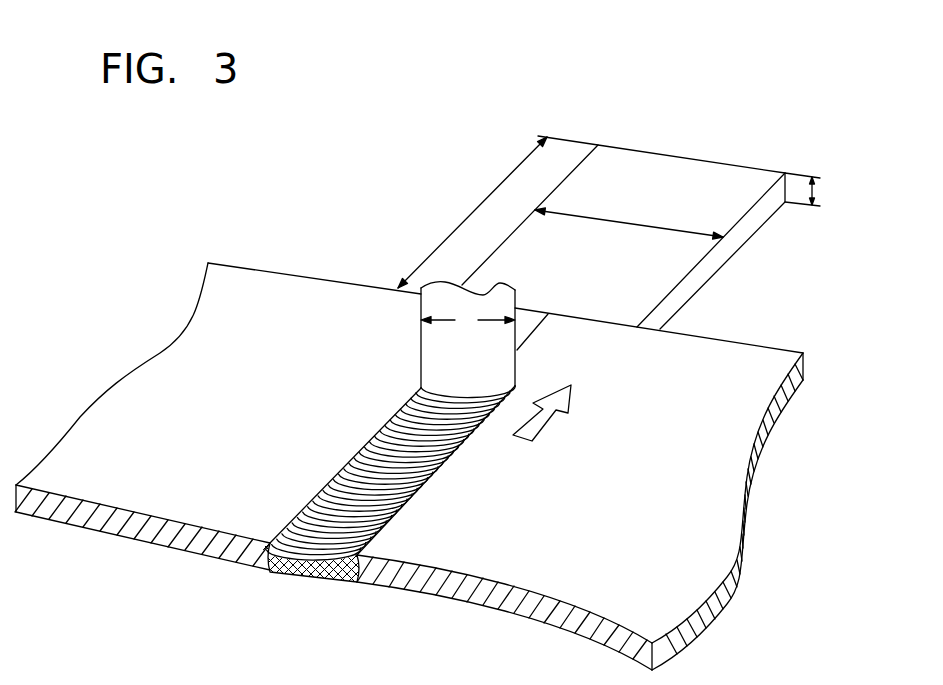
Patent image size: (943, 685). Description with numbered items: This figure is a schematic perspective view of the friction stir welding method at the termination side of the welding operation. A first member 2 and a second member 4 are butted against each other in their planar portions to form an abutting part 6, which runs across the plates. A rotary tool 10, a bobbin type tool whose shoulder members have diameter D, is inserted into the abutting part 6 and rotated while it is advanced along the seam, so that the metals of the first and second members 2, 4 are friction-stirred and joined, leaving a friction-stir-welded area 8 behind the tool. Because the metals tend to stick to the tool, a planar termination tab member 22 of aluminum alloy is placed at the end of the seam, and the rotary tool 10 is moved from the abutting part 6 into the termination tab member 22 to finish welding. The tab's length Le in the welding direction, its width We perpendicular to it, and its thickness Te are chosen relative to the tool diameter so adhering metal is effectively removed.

The first member 2 is at (327, 297).
The second member 4 is at (657, 560).
The abutting part 6 is at (540, 337).
The friction-stir-welded area 8 is at (398, 480).
The rotary tool 10 is at (405, 353).
The termination tab member 22 is at (677, 178).